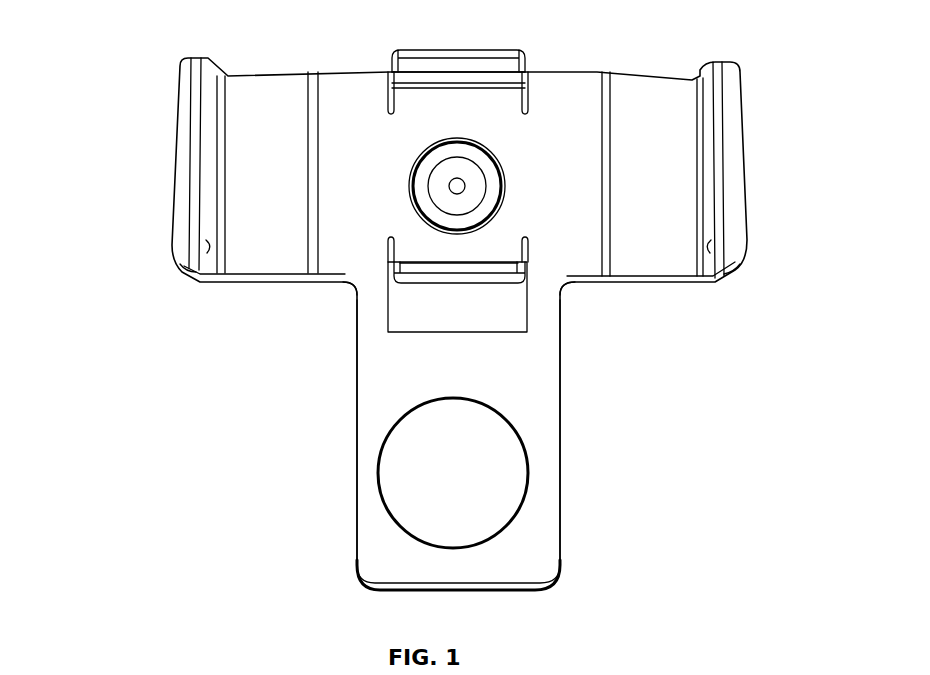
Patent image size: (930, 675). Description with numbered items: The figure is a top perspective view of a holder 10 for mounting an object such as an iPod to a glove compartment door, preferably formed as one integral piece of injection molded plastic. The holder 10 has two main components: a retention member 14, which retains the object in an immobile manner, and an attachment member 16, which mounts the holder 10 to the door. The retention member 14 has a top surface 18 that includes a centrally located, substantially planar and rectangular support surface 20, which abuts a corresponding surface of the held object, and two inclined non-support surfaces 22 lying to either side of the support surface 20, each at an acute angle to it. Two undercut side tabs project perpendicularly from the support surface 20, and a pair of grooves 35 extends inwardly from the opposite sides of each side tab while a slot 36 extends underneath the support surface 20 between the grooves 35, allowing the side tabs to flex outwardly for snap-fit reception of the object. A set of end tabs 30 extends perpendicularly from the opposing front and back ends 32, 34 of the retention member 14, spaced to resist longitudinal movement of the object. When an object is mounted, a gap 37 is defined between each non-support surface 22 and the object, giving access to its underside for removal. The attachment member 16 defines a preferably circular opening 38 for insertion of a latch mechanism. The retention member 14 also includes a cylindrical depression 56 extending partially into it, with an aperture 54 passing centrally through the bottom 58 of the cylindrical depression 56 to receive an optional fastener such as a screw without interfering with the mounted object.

The holder 10 is at (116, 55).
The retention member 14 is at (377, 60).
The attachment member 16 is at (592, 439).
The top surface 18 is at (574, 92).
The support surface 20 is at (342, 183).
The non-support surfaces 22 is at (262, 93).
The end tabs 30 is at (188, 112).
The front end 32 is at (205, 250).
The back end 34 is at (707, 250).
The grooves 35 is at (386, 101).
The slots 36 is at (467, 280).
The gap 37 is at (292, 235).
The opening 38 is at (395, 473).
The aperture 54 is at (465, 186).
The cylindrical depression 56 is at (438, 150).
The bottom 58 is at (453, 205).